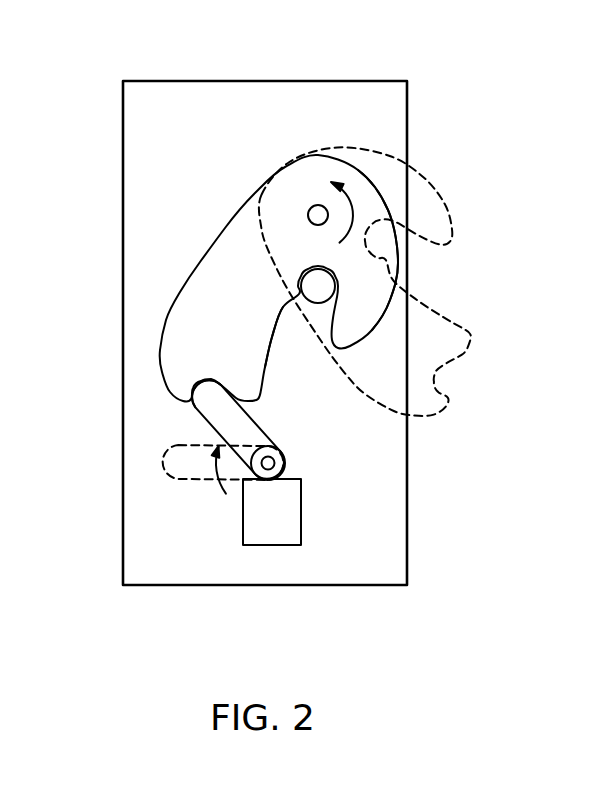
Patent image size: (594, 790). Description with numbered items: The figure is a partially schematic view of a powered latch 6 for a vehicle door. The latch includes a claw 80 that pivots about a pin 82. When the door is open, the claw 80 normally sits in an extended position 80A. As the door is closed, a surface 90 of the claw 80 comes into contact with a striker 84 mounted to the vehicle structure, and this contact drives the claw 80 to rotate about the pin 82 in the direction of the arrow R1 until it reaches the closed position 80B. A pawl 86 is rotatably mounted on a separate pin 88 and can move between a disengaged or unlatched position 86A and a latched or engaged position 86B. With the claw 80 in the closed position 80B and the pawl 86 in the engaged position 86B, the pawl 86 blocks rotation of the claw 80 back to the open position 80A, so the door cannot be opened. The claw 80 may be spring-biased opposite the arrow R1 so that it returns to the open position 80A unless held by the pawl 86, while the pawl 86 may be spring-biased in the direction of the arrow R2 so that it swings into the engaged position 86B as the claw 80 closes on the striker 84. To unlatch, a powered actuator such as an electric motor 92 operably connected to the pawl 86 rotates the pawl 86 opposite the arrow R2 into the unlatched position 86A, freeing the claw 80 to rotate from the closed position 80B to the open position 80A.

The powered latch 6 is at (268, 81).
The claw 80 is at (318, 155).
The extended position 80A is at (443, 200).
The closed position 80B is at (380, 317).
The pin 82 is at (310, 210).
The striker 84 is at (313, 304).
The pawl 86 is at (203, 415).
The disengaged or unlatched position 86A is at (163, 470).
The latched or engaged position 86B is at (206, 401).
The pin 88 is at (277, 462).
The surface 90 is at (273, 345).
The electric motor 92 is at (273, 537).
The arrow R1 is at (350, 203).
The arrow R2 is at (210, 470).